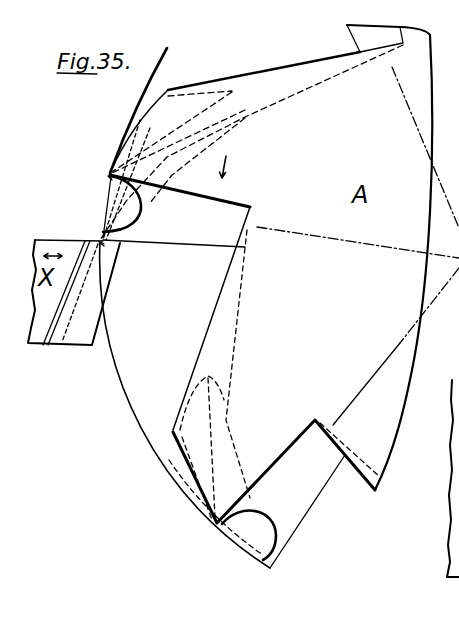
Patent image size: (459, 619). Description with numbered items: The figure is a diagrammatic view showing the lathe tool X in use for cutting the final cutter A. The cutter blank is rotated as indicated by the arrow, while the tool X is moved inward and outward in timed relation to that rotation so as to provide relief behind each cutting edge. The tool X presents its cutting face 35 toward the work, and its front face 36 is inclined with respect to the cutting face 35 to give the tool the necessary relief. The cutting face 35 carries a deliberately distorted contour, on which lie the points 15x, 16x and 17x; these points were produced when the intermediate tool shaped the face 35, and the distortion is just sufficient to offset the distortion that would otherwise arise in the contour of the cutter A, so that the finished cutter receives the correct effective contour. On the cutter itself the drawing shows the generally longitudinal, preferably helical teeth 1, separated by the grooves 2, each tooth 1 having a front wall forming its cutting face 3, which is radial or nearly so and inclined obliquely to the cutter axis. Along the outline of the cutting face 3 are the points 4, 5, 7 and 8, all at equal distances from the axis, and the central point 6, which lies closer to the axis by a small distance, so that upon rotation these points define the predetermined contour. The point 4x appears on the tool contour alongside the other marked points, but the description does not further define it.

The tooth 1 is at (159, 146).
The groove 2 is at (178, 318).
The cutting face 3 is at (162, 233).
The point 4 is at (99, 241).
The fold line 4x is at (99, 241).
The point 5 is at (103, 232).
The central point 6 is at (147, 223).
The point 7 is at (108, 177).
The point 8 is at (110, 172).
The point 15x is at (99, 241).
The point 16x is at (134, 258).
The point 17x is at (99, 242).
The cutting face 35 is at (42, 238).
The front face 36 is at (110, 304).